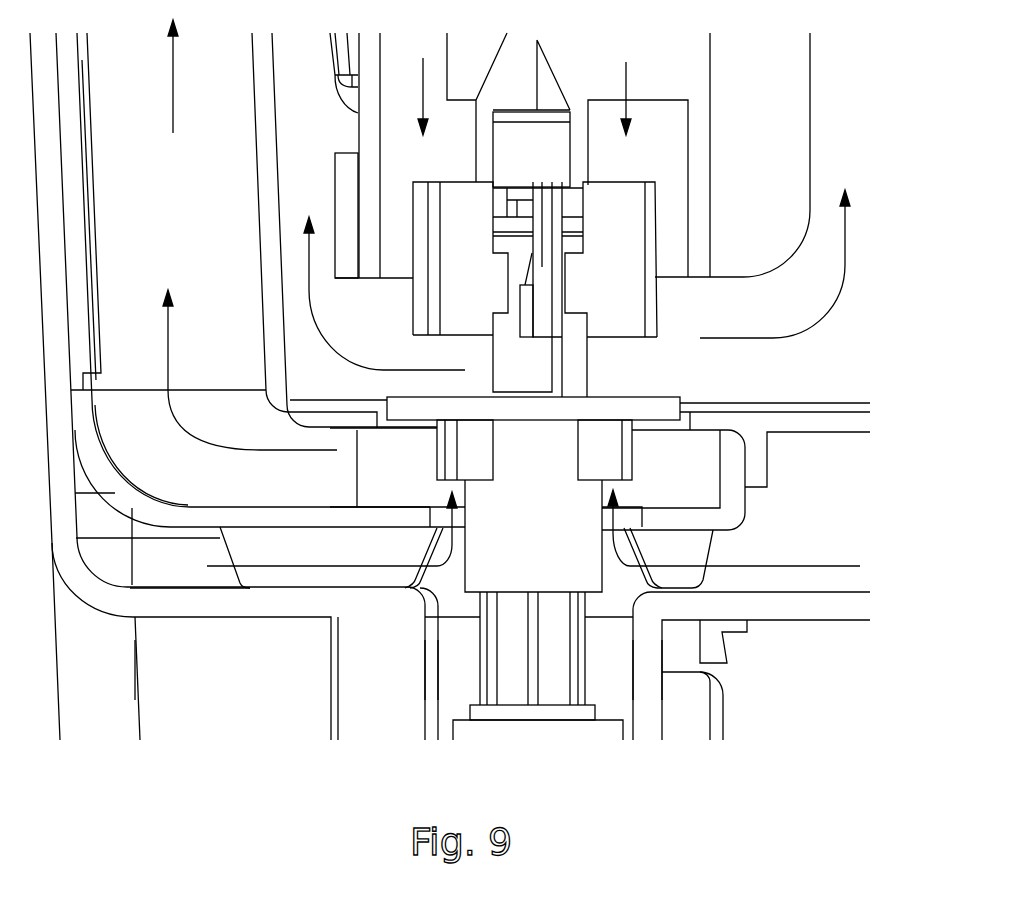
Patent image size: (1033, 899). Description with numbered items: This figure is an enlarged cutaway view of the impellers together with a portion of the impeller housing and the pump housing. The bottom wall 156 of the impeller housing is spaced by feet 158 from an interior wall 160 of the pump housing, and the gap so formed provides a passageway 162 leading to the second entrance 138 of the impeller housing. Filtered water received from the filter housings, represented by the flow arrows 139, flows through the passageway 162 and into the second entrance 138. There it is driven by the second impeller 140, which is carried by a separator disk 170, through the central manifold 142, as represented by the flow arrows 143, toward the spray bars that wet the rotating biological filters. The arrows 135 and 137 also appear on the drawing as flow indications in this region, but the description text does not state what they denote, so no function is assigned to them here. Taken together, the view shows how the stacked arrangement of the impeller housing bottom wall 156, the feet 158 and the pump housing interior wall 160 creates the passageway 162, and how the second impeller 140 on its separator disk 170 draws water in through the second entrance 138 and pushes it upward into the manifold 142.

The inlet gas flow arrows 135 is at (423, 87).
The gas flow path arrows 137 is at (360, 362).
The second entrance 138 is at (430, 522).
The flow arrows 139 is at (243, 565).
The second impeller 140 is at (613, 445).
The central manifold 142 is at (190, 203).
The flow arrows 143 is at (173, 102).
The bottom wall 156 is at (167, 513).
The feet 158 is at (374, 558).
The interior wall 160 is at (257, 608).
The passageway 162 is at (183, 578).
The separator disk 170 is at (662, 410).